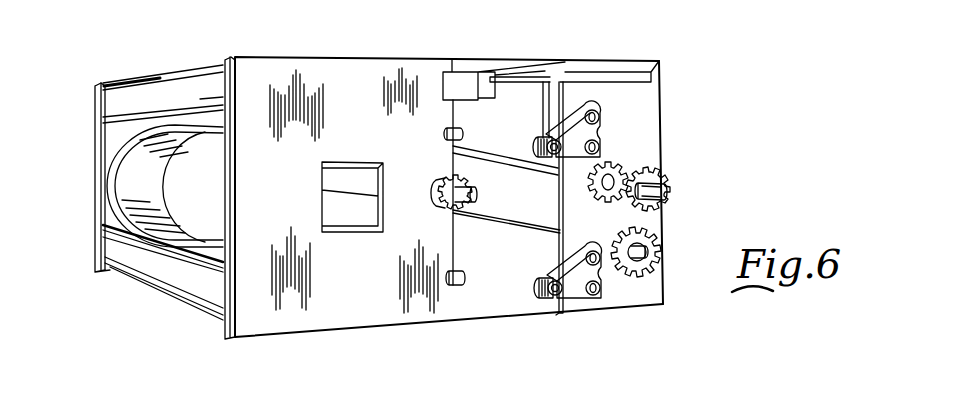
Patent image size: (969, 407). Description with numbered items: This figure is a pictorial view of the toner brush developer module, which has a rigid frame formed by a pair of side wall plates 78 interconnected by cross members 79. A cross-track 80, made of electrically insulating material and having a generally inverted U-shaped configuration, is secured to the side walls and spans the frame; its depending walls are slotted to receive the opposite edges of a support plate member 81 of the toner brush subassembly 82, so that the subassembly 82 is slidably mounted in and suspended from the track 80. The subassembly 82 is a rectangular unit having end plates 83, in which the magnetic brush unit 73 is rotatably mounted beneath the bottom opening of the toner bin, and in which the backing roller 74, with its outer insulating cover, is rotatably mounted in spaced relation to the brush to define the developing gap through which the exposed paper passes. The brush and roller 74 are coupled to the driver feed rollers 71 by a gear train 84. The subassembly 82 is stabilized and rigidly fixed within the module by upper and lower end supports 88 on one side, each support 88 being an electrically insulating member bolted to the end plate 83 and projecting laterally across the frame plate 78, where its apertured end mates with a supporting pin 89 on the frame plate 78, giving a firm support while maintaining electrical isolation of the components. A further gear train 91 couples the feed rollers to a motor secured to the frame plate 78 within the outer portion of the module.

The pinch rollers 71 is at (442, 210).
The magnetic brush unit 73 is at (510, 203).
The backing roller 74 is at (525, 228).
The side wall plates 78 is at (100, 157).
The cross members 79 is at (157, 88).
The cross-track 80 is at (498, 40).
The support plate member 81 is at (456, 112).
The toner brush subassembly 82 is at (665, 113).
The end plates 83 is at (648, 147).
The gear train 84 is at (660, 227).
The end supports 88 is at (577, 108).
The supporting pin 89 is at (447, 140).
The gear train 91 is at (133, 193).